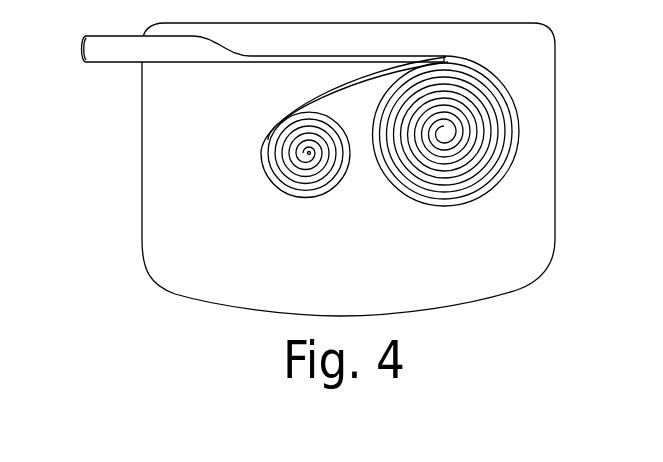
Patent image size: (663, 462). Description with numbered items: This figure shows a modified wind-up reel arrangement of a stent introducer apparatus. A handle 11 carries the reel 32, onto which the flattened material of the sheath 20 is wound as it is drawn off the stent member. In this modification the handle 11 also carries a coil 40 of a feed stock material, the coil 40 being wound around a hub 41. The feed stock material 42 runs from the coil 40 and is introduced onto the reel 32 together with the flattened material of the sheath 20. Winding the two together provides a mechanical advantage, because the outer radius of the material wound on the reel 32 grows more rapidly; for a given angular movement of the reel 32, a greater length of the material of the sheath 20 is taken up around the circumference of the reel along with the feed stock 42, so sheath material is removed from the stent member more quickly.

The handle 11 is at (173, 270).
The sheath 20 is at (190, 62).
The reel 32 is at (457, 207).
The coil 40 is at (263, 155).
The hub 41 is at (309, 153).
The feed stock material 42 is at (287, 109).